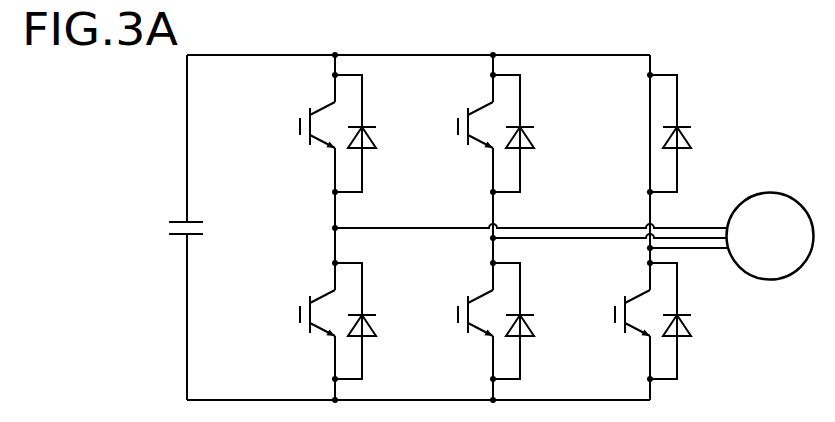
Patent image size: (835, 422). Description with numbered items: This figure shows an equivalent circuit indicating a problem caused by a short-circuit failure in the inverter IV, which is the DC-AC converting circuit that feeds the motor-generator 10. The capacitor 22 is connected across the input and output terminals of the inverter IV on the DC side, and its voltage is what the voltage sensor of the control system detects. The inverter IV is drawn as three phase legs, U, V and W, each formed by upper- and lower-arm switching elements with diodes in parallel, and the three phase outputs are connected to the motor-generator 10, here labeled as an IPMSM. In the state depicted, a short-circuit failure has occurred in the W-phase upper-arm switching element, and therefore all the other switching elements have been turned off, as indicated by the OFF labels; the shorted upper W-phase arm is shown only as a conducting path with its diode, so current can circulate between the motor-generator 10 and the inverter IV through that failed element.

The inverter IV is at (702, 48).
The capacitor 22 is at (172, 221).
The motor-generator 10 is at (773, 193).